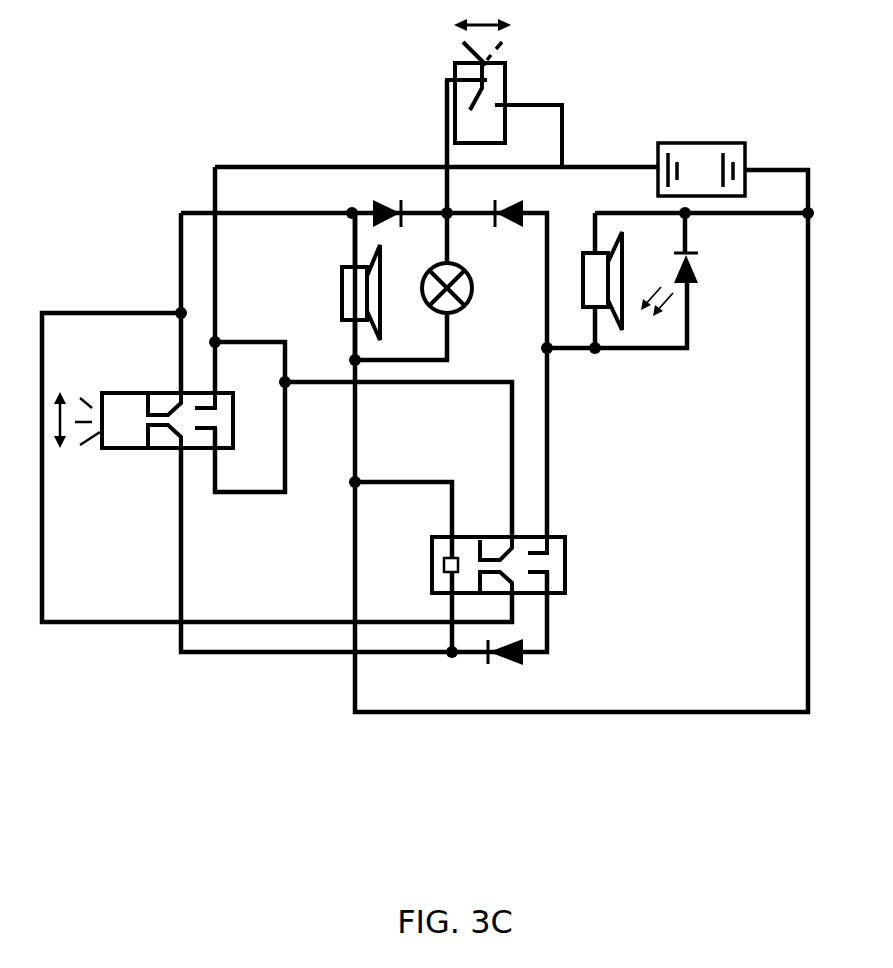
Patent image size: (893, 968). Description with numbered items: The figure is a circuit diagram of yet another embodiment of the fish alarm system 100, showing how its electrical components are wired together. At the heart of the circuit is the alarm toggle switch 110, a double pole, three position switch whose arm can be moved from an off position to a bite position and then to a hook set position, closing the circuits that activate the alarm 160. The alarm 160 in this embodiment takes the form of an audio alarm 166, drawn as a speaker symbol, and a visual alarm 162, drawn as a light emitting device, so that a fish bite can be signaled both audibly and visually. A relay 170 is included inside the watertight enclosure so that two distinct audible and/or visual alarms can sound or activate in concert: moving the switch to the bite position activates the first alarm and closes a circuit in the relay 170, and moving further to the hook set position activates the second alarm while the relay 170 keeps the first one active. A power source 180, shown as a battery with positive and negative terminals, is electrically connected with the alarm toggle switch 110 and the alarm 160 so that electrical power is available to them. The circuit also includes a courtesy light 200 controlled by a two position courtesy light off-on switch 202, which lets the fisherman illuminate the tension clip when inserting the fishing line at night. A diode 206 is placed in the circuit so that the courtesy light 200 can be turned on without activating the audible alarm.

The fish alarm system 100 is at (447, 733).
The alarm toggle switch 110 is at (162, 398).
The alarm 160 is at (254, 184).
The visual alarm 162 is at (450, 300).
The audio alarm 166 is at (343, 266).
The relay 170 is at (556, 590).
The power source 180 is at (703, 147).
The courtesy light 200 is at (437, 270).
The courtesy light off-on switch 202 is at (497, 88).
The diode 206 is at (376, 208).